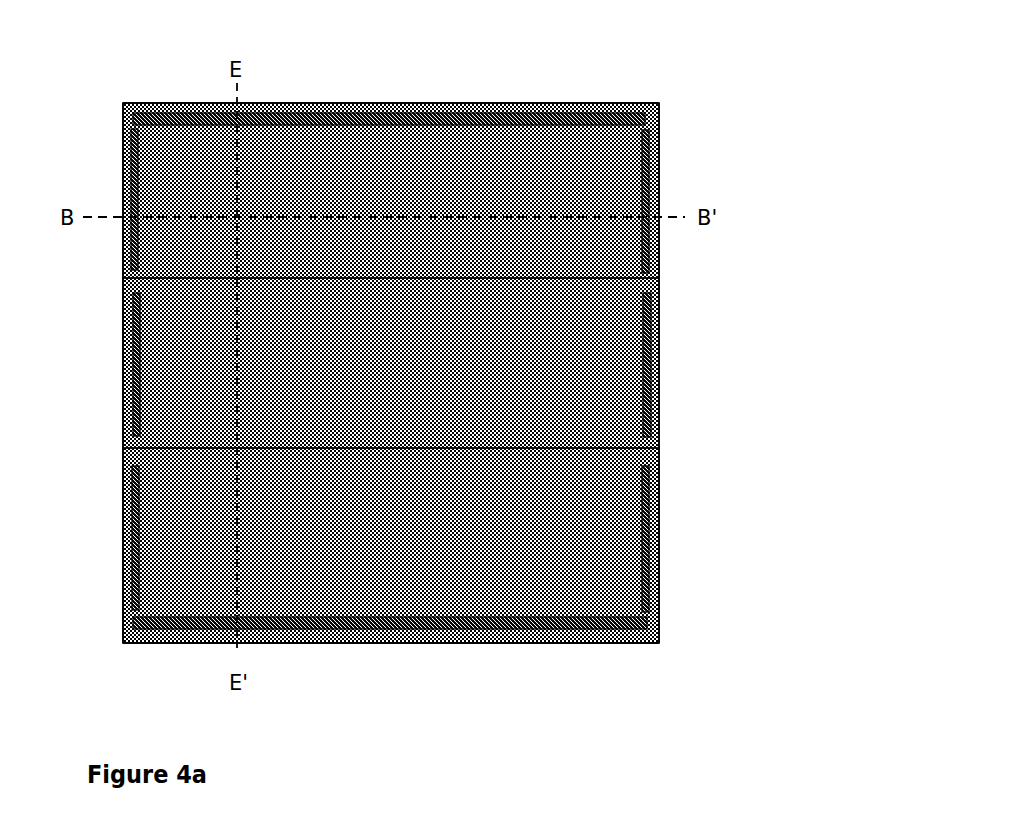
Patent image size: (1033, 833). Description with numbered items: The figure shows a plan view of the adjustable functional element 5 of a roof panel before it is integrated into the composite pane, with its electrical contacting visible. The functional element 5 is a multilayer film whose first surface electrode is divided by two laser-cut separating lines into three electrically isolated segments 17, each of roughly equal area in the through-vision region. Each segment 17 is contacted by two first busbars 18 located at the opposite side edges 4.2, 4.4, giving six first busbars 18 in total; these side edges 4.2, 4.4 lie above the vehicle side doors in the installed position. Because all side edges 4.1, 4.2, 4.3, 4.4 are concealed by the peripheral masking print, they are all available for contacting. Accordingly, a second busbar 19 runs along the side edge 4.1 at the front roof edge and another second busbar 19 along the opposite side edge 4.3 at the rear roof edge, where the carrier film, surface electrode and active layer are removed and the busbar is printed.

The functional element 5 is at (755, 275).
The side edge 4.1 is at (472, 101).
The side edge 4.2 is at (659, 398).
The side edge 4.3 is at (367, 644).
The side edge 4.4 is at (123, 348).
The segment 17 is at (618, 169).
The first busbar 18 is at (133, 160).
The second busbar 19 is at (522, 118).